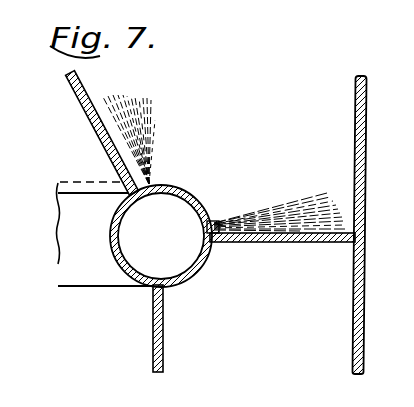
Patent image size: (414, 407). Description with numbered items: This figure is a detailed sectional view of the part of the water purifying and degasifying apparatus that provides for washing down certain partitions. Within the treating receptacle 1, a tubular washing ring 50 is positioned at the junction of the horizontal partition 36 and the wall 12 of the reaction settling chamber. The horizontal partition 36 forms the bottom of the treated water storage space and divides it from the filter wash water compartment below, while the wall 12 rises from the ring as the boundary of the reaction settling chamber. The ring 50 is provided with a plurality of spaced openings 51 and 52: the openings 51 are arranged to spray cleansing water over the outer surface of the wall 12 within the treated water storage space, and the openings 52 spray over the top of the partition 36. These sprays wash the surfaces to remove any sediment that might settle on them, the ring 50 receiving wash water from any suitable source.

The treating receptacle 1 is at (352, 298).
The wall of the reaction settling chamber 12 is at (93, 122).
The horizontal partition 36 is at (282, 244).
The washing ring 50 is at (182, 193).
The spaced openings 51 is at (151, 182).
The spaced openings 52 is at (216, 222).